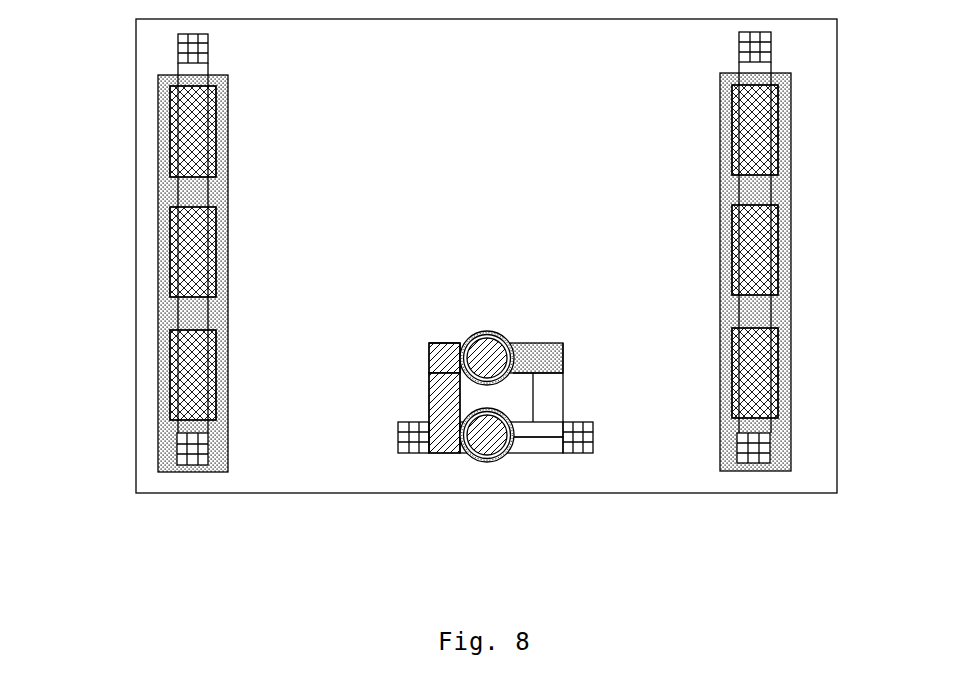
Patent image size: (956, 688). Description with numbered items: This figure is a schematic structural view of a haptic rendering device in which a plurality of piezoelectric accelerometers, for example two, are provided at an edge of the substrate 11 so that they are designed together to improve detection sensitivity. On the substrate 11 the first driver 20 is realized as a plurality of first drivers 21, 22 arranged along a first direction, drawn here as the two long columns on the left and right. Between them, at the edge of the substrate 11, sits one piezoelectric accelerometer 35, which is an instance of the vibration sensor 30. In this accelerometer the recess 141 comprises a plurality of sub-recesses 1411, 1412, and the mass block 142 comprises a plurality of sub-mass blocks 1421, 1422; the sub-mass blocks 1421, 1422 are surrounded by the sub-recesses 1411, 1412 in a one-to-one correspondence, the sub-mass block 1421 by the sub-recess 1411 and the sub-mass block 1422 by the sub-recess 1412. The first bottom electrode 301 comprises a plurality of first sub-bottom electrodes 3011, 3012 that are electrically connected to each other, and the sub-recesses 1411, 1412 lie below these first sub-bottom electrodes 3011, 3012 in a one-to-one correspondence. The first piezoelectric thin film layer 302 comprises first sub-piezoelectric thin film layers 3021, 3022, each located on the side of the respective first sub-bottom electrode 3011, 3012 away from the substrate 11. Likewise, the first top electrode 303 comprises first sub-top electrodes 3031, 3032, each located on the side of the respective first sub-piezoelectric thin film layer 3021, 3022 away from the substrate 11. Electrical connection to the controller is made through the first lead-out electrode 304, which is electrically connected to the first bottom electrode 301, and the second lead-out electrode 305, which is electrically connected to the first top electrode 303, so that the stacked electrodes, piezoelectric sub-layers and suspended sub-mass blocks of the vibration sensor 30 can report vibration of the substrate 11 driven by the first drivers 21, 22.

The substrate 11 is at (150, 55).
The first driver 20 is at (484, 252).
The first driver 21 is at (158, 173).
The first driver 22 is at (787, 181).
The vibration sensor 30 is at (482, 367).
The transfer assembly 35 is at (482, 367).
The recess 141 is at (524, 267).
The sub-recess 1411 is at (490, 332).
The sub-recess 1412 is at (502, 343).
The mass block 142 is at (432, 290).
The sub-mass block 1421 is at (438, 345).
The sub-mass block 1422 is at (476, 348).
The first bottom electrode 301 is at (592, 346).
The first sub-bottom electrode 3011 is at (541, 430).
The first sub-bottom electrode 3012 is at (527, 343).
The first piezoelectric thin film layer 302 is at (501, 482).
The first sub-piezoelectric thin film layer 3021 is at (510, 460).
The first sub-piezoelectric thin film layer 3022 is at (510, 380).
The first top electrode 303 is at (363, 380).
The first sub-top electrode 3031 is at (420, 420).
The first sub-top electrode 3032 is at (430, 350).
The first lead-out electrode 304 is at (593, 452).
The second lead-out electrode 305 is at (398, 450).